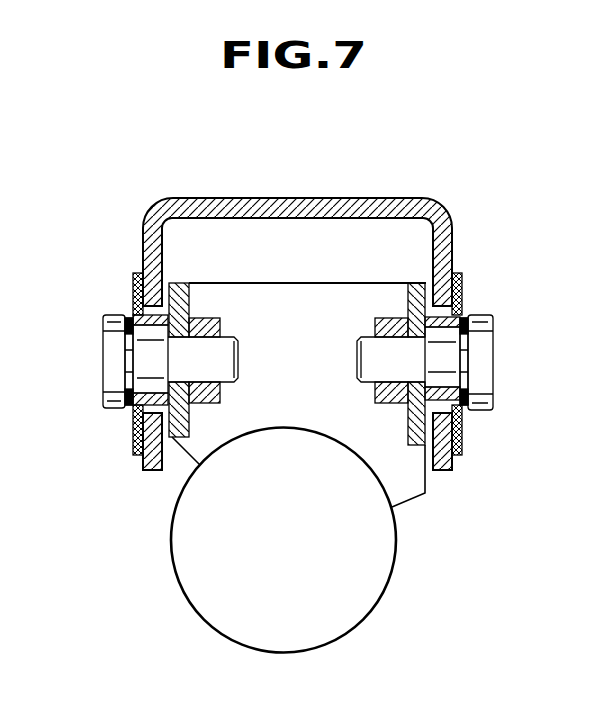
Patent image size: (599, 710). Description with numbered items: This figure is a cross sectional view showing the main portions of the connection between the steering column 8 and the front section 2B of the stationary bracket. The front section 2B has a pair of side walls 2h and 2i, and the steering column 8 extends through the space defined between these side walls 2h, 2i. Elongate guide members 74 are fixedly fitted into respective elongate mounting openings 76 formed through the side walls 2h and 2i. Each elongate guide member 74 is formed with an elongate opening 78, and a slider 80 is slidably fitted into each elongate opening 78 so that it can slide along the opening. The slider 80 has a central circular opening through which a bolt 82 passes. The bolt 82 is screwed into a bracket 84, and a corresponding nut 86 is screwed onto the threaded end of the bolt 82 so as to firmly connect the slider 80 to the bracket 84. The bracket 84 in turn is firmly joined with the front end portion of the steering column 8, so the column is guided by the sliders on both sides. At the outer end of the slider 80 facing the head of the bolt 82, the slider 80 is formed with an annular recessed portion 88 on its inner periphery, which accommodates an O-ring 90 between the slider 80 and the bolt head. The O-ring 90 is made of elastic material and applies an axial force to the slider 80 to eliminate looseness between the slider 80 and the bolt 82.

The front section 2B is at (395, 186).
The side wall 2h is at (148, 218).
The side wall 2i is at (448, 246).
The elongate guide member 74 is at (132, 290).
The elongate mounting opening 76 is at (136, 452).
The elongate opening 78 is at (465, 312).
The slider 80 is at (183, 283).
The bolt 82 is at (112, 366).
The bracket 84 is at (299, 300).
The nut 86 is at (219, 326).
The annular recessed portion 88 is at (490, 324).
The O-ring 90 is at (108, 408).
The steering column 8 is at (396, 540).